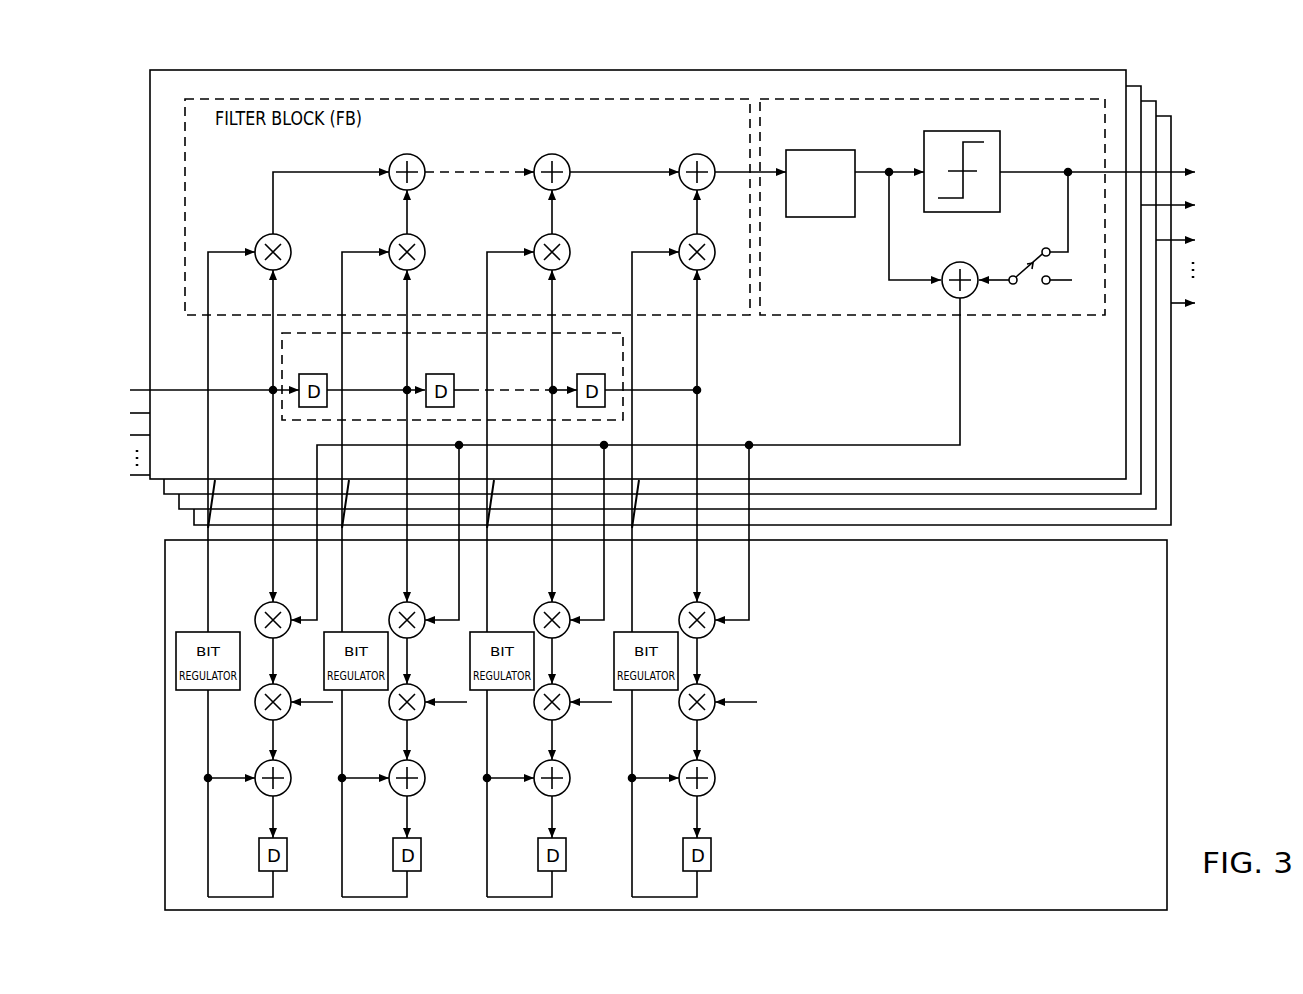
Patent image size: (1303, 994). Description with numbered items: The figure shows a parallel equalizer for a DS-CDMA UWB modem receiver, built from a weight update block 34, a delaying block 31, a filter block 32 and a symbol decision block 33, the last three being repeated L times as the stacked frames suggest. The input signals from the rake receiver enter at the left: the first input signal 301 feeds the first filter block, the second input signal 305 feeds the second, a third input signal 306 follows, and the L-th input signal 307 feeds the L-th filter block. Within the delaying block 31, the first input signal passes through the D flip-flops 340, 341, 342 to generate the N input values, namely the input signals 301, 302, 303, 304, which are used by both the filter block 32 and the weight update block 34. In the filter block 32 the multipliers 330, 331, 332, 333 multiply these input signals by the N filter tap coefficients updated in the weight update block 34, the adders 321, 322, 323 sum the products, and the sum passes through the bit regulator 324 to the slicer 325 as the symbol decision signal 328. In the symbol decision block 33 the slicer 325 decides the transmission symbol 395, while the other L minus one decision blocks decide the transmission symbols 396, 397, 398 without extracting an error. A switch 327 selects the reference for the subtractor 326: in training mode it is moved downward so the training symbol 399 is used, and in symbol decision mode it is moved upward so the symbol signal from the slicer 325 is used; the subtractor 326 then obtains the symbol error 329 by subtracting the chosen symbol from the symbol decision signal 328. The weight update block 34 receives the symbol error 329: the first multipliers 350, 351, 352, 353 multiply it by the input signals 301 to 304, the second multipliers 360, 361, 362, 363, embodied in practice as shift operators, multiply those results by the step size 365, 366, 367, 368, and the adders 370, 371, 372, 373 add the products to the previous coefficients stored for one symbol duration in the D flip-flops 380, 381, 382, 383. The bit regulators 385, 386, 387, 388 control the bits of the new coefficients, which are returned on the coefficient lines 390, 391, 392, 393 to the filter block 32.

The delaying block 31 is at (590, 421).
The filter block 32 is at (713, 98).
The symbol decision block 33 is at (1065, 98).
The weight update block 34 is at (1167, 735).
The first input signal 301 is at (103, 392).
The input signal r_n-L 302 is at (368, 375).
The input signal r_n-L(N-2) 303 is at (503, 375).
The input signal r_n-L(N-1) 304 is at (647, 375).
The second input signal 305 is at (96, 416).
The input signal r_n-2 306 is at (97, 440).
The L-th input signal 307 is at (100, 500).
The adder 321 is at (419, 159).
The adder 322 is at (564, 159).
The adder 323 is at (709, 159).
The bit regulator 324 is at (815, 150).
The slicer 325 is at (957, 131).
The subtractor 326 is at (948, 265).
The switch 327 is at (1022, 262).
The symbol decision signal 328 is at (888, 143).
The symbol error 329 is at (986, 355).
The multiplier 330 is at (285, 239).
The multiplier 331 is at (419, 239).
The multiplier 332 is at (564, 239).
The multiplier 333 is at (709, 239).
The D flip-flop 340 is at (304, 374).
The D flip-flop 341 is at (430, 374).
The D flip-flop 342 is at (582, 374).
The first multiplier 350 is at (262, 604).
The first multiplier 351 is at (419, 606).
The first multiplier 352 is at (564, 606).
The first multiplier 353 is at (709, 606).
The second multiplier 360 is at (262, 718).
The second multiplier 361 is at (396, 718).
The second multiplier 362 is at (541, 718).
The second multiplier 363 is at (686, 718).
The step size 365 is at (322, 700).
The step size 366 is at (463, 700).
The step size 367 is at (608, 700).
The step size 368 is at (753, 700).
The adder 370 is at (285, 764).
The adder 371 is at (419, 764).
The adder 372 is at (564, 764).
The adder 373 is at (709, 764).
The D flip-flop 380 is at (283, 839).
The D flip-flop 381 is at (417, 839).
The D flip-flop 382 is at (562, 839).
The D flip-flop 383 is at (707, 839).
The bit regulator 385 is at (197, 631).
The bit regulator 386 is at (377, 631).
The bit regulator 387 is at (522, 631).
The bit regulator 388 is at (666, 631).
The coefficient feedback line 390 is at (209, 566).
The coefficient feedback line 391 is at (343, 566).
The coefficient feedback line 392 is at (488, 566).
The coefficient feedback line 393 is at (633, 566).
The transmission symbol 395 is at (1226, 172).
The transmission symbol 396 is at (1240, 207).
The transmission symbol 397 is at (1240, 242).
The transmission symbol 398 is at (1260, 302).
The training symbol 399 is at (1062, 290).